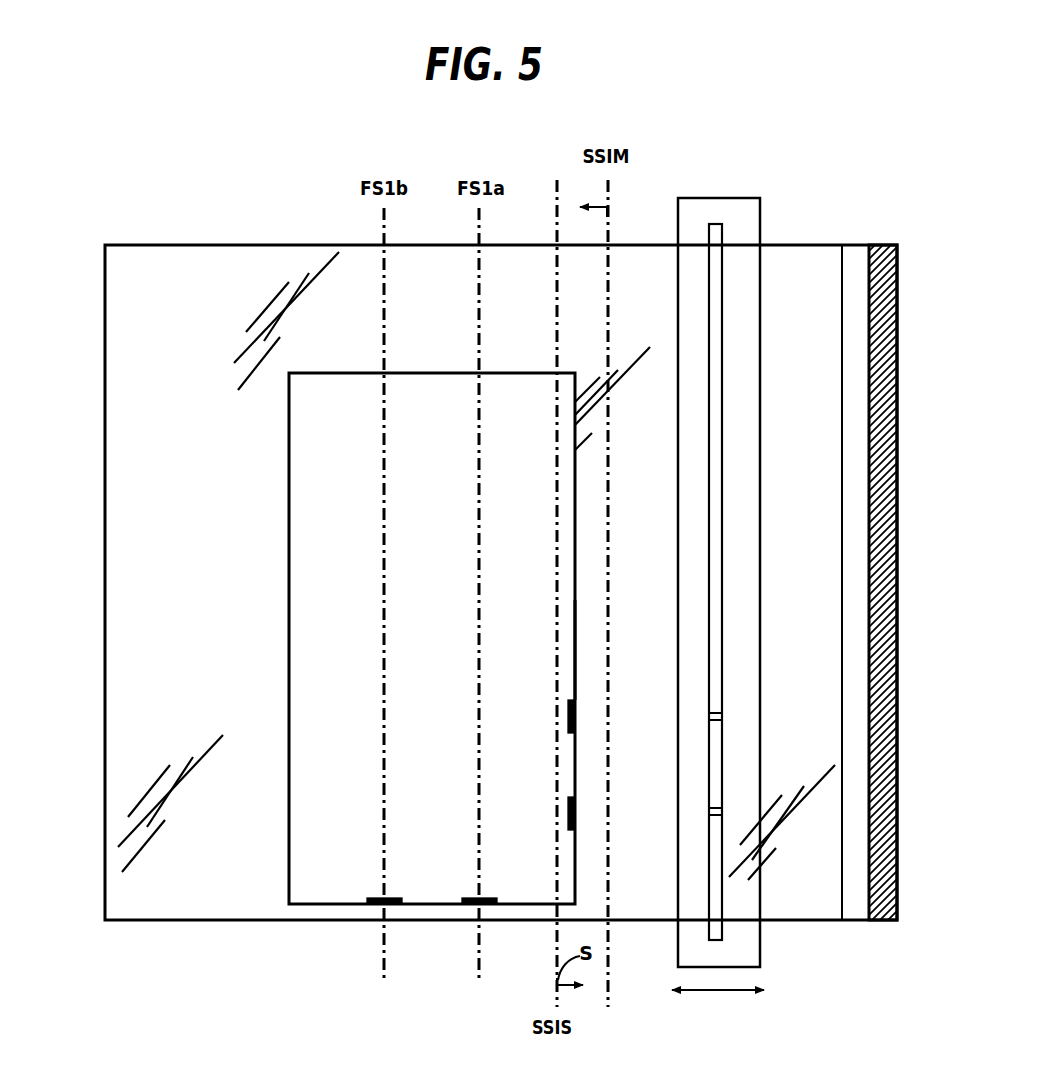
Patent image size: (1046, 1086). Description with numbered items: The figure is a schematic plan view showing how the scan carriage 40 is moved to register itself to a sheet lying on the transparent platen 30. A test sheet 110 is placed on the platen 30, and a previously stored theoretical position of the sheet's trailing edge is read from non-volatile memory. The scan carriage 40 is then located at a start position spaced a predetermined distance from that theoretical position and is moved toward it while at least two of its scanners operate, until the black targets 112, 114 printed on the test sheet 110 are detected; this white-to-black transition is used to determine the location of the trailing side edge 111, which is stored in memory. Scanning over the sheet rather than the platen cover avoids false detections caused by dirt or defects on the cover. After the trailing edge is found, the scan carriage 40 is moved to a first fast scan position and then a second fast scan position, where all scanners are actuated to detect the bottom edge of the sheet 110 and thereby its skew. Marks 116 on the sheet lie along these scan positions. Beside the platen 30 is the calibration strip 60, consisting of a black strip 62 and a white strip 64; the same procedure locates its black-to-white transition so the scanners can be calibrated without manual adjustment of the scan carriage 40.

The platen 30 is at (175, 912).
The scan carriage 40 is at (713, 186).
The calibration strip 60 is at (866, 236).
The black strip 62 is at (883, 921).
The white strip 64 is at (856, 922).
The test sheet 110 is at (289, 600).
The trailing side edge 111 is at (575, 653).
The black target 112 is at (575, 717).
The black target 114 is at (575, 813).
The alignment marks 116 is at (392, 906).